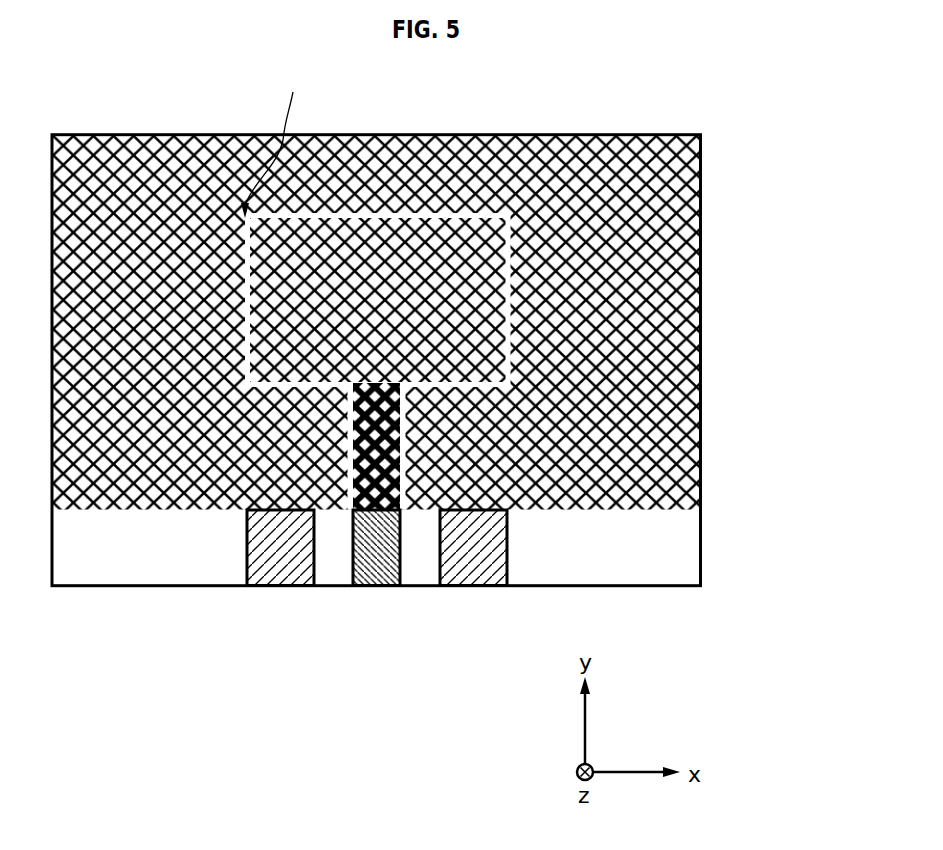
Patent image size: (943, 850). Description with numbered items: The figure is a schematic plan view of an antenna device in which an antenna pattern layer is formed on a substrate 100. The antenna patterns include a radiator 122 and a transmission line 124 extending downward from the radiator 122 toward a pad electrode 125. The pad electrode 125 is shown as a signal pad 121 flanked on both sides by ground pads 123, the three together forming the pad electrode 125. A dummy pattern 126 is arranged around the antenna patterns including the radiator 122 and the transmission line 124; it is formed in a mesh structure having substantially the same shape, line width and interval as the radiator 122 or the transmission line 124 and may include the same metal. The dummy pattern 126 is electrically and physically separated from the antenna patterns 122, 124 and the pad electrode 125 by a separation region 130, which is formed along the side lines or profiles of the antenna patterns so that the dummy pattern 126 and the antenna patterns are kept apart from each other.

The substrate 100 is at (690, 550).
The first electrode 121 is at (376, 589).
The second electrode 123 is at (282, 585).
The pad electrode 125 is at (377, 614).
The radiator 122 is at (478, 286).
The transmission line 124 is at (400, 446).
The dummy pattern 126 is at (690, 179).
The separation region 130 is at (280, 139).